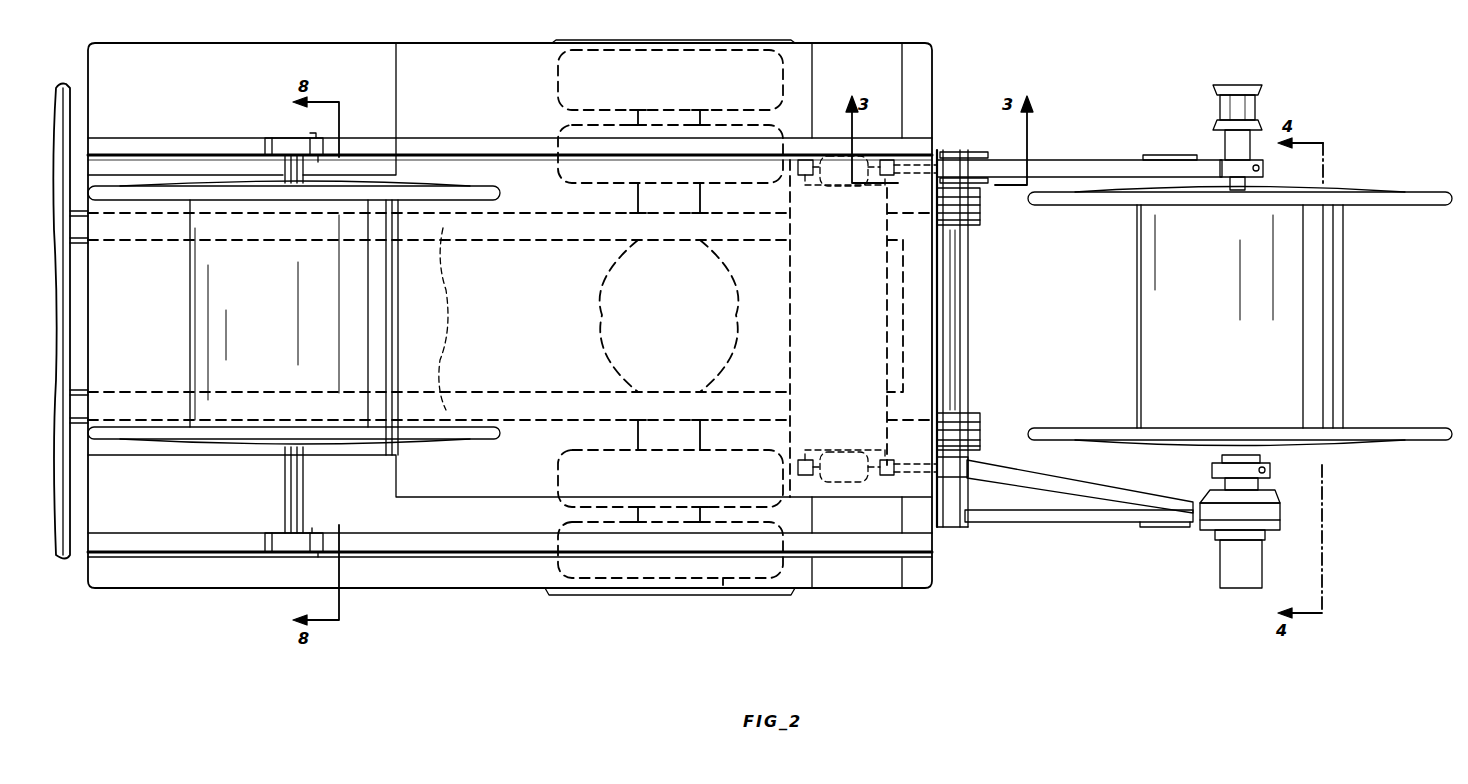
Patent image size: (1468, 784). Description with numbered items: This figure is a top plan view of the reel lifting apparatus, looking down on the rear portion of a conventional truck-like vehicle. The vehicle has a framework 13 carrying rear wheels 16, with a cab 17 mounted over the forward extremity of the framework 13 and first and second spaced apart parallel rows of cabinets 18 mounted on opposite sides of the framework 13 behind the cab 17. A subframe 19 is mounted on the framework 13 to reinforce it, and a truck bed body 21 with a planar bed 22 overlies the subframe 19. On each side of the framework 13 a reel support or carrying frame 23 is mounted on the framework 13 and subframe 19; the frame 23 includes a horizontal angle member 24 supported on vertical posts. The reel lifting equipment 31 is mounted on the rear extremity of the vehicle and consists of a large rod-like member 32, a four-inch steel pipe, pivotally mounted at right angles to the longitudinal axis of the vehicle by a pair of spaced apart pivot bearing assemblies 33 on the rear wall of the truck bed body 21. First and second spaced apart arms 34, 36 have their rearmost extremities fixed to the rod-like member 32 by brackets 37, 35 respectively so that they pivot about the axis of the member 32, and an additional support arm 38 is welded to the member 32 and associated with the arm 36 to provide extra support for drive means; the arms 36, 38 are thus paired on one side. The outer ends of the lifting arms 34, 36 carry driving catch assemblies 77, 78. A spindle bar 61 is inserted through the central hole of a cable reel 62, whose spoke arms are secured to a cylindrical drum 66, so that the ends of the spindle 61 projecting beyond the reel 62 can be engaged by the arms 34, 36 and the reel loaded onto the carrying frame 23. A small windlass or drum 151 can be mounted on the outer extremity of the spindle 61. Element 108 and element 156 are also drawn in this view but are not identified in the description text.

The framework 13 is at (439, 316).
The rear wheels 16 is at (653, 50).
The cab 17 is at (70, 70).
The cabinets 18 is at (465, 40).
The subframe 19 is at (805, 320).
The truck bed body 21 is at (937, 278).
The planar bed 22 is at (945, 312).
The reel support or carrying frame 23 is at (515, 135).
The horizontal angle member 24 is at (430, 150).
The reel lifting equipment 31 is at (972, 528).
The rod-like member 32 is at (953, 370).
The pivot bearing assemblies 33 is at (980, 203).
The first arm 34 is at (1085, 160).
The bracket 35 is at (968, 462).
The second arm 36 is at (1105, 495).
The bracket 37 is at (982, 155).
The additional support arm 38 is at (1058, 522).
The spindle bar 61 is at (290, 478).
The cable reel 62 is at (162, 432).
The cylindrical drum 66 is at (1345, 360).
The driving catch assembly 77 is at (1266, 168).
The driving catch assembly 78 is at (1272, 470).
The motor 108 is at (1195, 525).
The windlass or drum 151 is at (1235, 105).
The pin block 156 is at (275, 140).